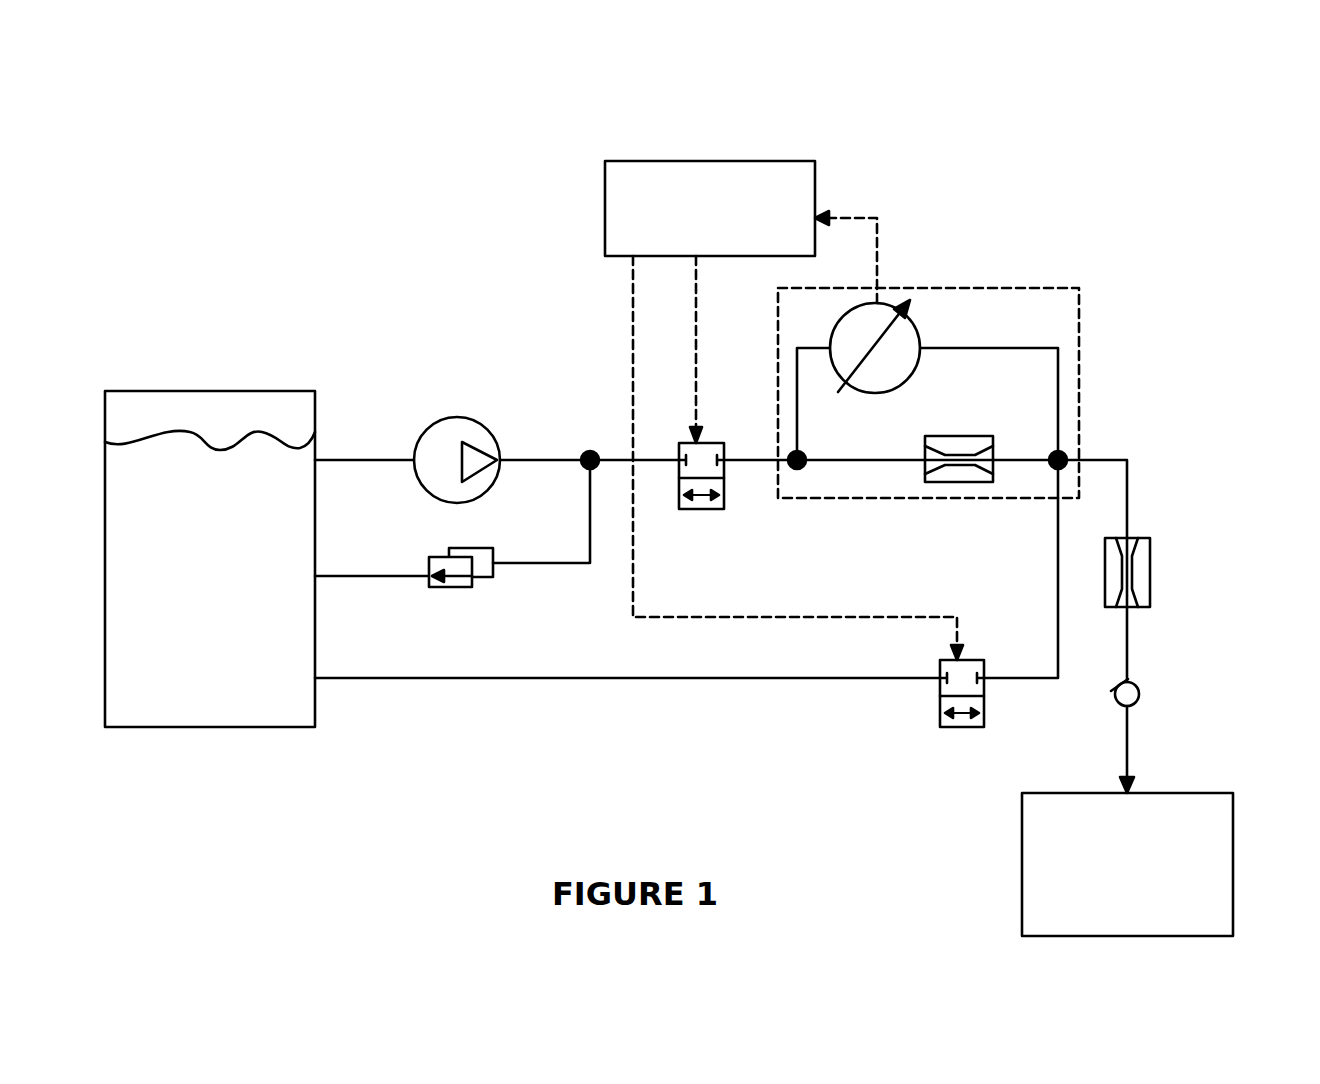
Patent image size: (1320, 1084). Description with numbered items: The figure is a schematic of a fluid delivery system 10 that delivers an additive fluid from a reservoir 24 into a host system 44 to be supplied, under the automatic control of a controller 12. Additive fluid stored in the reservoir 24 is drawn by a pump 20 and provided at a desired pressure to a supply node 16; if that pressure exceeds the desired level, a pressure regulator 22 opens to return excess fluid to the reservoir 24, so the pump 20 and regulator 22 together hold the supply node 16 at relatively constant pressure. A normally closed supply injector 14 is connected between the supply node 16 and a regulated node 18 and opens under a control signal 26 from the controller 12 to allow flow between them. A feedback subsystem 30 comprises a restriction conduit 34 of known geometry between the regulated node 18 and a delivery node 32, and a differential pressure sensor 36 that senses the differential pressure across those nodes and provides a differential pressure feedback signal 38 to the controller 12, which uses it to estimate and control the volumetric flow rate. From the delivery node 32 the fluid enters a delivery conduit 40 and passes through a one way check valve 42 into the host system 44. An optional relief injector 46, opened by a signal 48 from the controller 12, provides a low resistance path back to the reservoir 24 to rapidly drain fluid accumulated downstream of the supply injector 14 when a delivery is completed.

The fluid delivery system 10 is at (304, 206).
The controller 12 is at (710, 160).
The supply injector 14 is at (703, 511).
The supply node 16 is at (585, 452).
The regulated node 18 is at (805, 470).
The pump 20 is at (455, 416).
The pressure regulator 22 is at (448, 590).
The reservoir 24 is at (208, 729).
The control signal 26 is at (698, 385).
The feedback subsystem 30 is at (1033, 288).
The delivery node 32 is at (1066, 456).
The restriction conduit 34 is at (960, 484).
The differential pressure sensor 36 is at (913, 318).
The differential pressure feedback signal 38 is at (878, 218).
The delivery conduit 40 is at (1151, 571).
The one way check valve 42 is at (1140, 688).
The host system 44 is at (1022, 866).
The relief injector 46 is at (962, 729).
The signal 48 is at (633, 365).